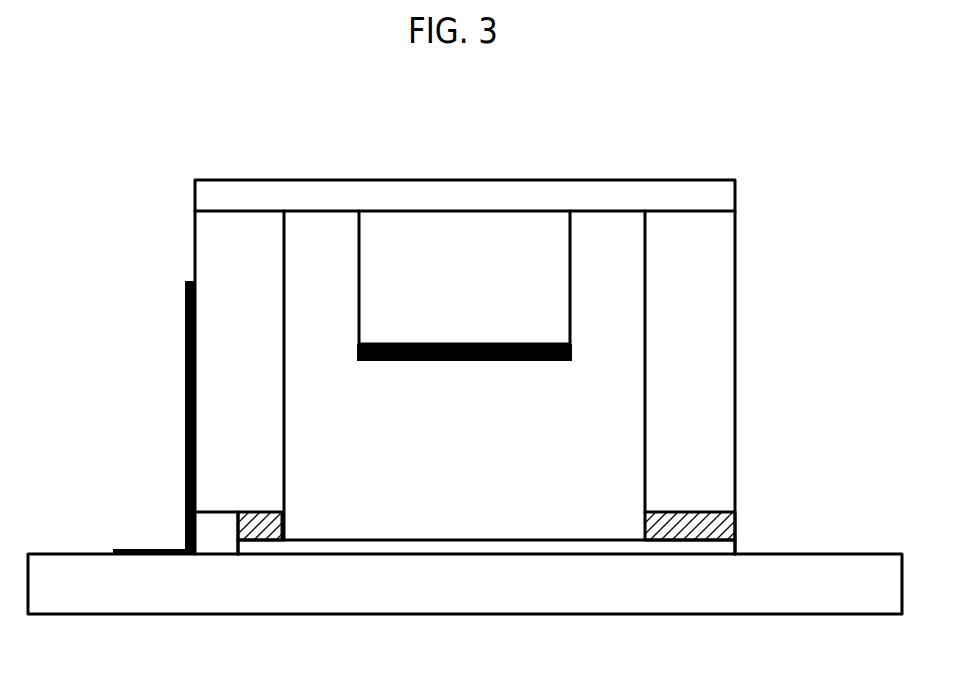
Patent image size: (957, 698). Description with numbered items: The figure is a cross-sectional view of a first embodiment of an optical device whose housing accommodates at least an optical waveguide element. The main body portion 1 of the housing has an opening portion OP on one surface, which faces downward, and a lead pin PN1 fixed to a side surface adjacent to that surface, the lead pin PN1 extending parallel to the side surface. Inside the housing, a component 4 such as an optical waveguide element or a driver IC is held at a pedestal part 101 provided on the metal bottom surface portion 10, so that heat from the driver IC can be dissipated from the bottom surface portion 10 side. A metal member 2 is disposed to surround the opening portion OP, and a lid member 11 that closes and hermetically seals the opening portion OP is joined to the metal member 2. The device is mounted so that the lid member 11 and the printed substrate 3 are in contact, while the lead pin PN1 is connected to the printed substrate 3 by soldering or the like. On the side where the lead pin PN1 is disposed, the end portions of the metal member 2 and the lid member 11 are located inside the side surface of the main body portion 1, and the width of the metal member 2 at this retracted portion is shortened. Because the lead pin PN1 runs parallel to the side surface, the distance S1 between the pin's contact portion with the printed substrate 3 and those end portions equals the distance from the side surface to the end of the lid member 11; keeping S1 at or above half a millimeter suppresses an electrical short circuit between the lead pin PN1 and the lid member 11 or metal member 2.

The main body portion 1 is at (705, 313).
The metal member 2 is at (281, 525).
The printed substrate 3 is at (762, 583).
The component 4 is at (423, 361).
The bottom surface portion 10 is at (677, 193).
The lid member 11 is at (520, 547).
The pedestal part 101 is at (520, 233).
The lead pin PN1 is at (185, 495).
The opening portion OP is at (522, 516).
The distance S1 is at (193, 554).